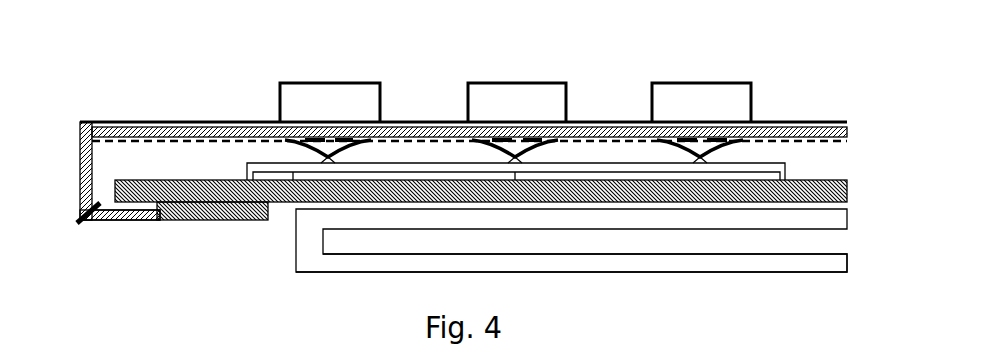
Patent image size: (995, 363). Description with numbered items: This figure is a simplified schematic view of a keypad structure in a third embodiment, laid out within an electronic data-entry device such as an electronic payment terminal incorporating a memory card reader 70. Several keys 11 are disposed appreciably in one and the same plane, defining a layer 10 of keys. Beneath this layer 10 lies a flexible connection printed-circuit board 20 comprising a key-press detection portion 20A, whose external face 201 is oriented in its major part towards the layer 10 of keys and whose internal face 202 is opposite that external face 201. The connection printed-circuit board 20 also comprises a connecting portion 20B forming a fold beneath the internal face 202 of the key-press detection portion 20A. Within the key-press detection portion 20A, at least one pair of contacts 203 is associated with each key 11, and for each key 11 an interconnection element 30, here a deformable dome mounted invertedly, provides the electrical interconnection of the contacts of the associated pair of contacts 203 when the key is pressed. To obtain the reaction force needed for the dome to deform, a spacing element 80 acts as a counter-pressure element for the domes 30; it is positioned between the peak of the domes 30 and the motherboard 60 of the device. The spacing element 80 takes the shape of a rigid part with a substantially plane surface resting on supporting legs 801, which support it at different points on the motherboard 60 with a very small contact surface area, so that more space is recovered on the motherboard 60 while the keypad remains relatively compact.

The layer of keys 10 is at (108, 120).
The key 11 is at (357, 83).
The connection printed-circuit board 20 is at (466, 195).
The key-press detection portion 20A is at (80, 200).
The connecting portion 20B is at (105, 222).
The external face 201 is at (850, 128).
The internal face 202 is at (852, 142).
The pair of contacts 203 is at (317, 140).
The interconnection element 30 is at (345, 138).
The motherboard 60 is at (850, 195).
The memory card reader 70 is at (850, 265).
The spacing element 80 is at (580, 251).
The supporting legs 801 is at (240, 215).